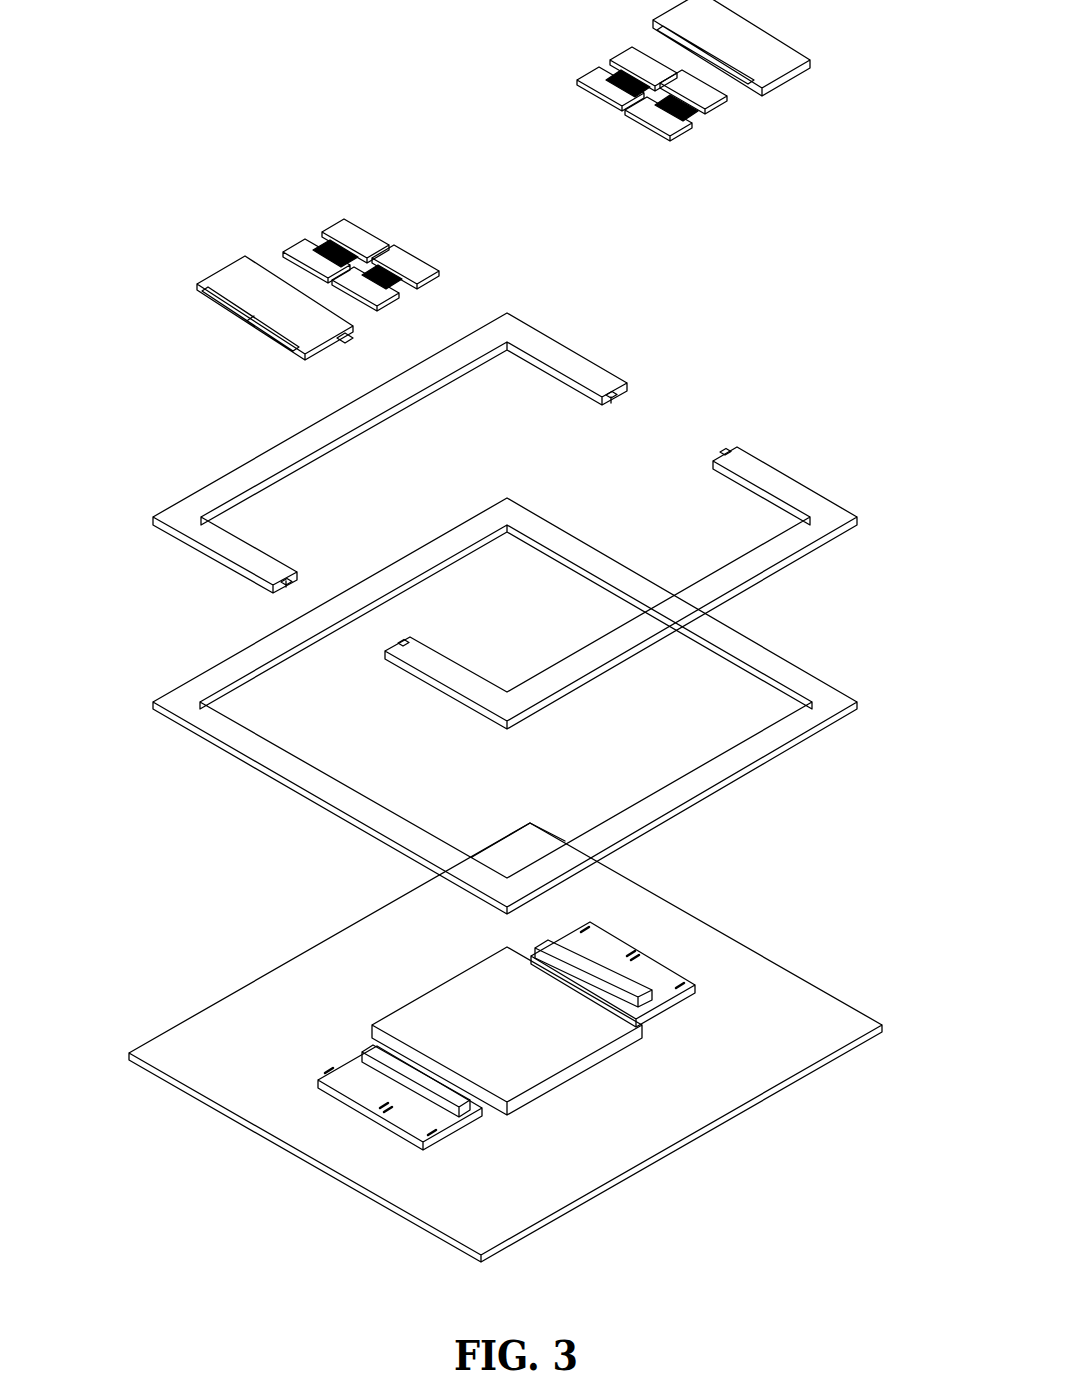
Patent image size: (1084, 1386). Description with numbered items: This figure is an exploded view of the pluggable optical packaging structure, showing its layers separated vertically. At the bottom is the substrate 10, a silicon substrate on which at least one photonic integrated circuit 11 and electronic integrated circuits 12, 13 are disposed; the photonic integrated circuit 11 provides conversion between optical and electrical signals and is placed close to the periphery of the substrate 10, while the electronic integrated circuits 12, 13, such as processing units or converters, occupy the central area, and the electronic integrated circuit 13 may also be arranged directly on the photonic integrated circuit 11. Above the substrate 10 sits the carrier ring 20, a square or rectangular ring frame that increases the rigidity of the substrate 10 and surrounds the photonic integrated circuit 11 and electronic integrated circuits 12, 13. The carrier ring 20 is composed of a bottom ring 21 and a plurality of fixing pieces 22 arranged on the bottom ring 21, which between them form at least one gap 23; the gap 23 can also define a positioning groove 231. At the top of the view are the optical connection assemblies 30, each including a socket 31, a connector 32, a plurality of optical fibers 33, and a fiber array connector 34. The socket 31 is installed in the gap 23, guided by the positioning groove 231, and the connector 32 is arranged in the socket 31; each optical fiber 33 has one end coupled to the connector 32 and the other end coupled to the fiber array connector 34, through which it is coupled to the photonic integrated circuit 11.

The substrate 10 is at (578, 1167).
The photonic integrated circuit 11 is at (657, 977).
The electronic integrated circuit 12 is at (550, 1047).
The electronic integrated circuit 13 is at (368, 1048).
The carrier ring 20 is at (118, 563).
The bottom ring 21 is at (223, 678).
The fixing piece 22 is at (215, 536).
The gap 23 is at (300, 582).
The positioning groove 231 is at (625, 398).
The optical connection assembly 30 is at (178, 108).
The socket 31 is at (240, 292).
The connector 32 is at (293, 252).
The optical fiber 33 is at (327, 238).
The fiber array connector 34 is at (347, 230).